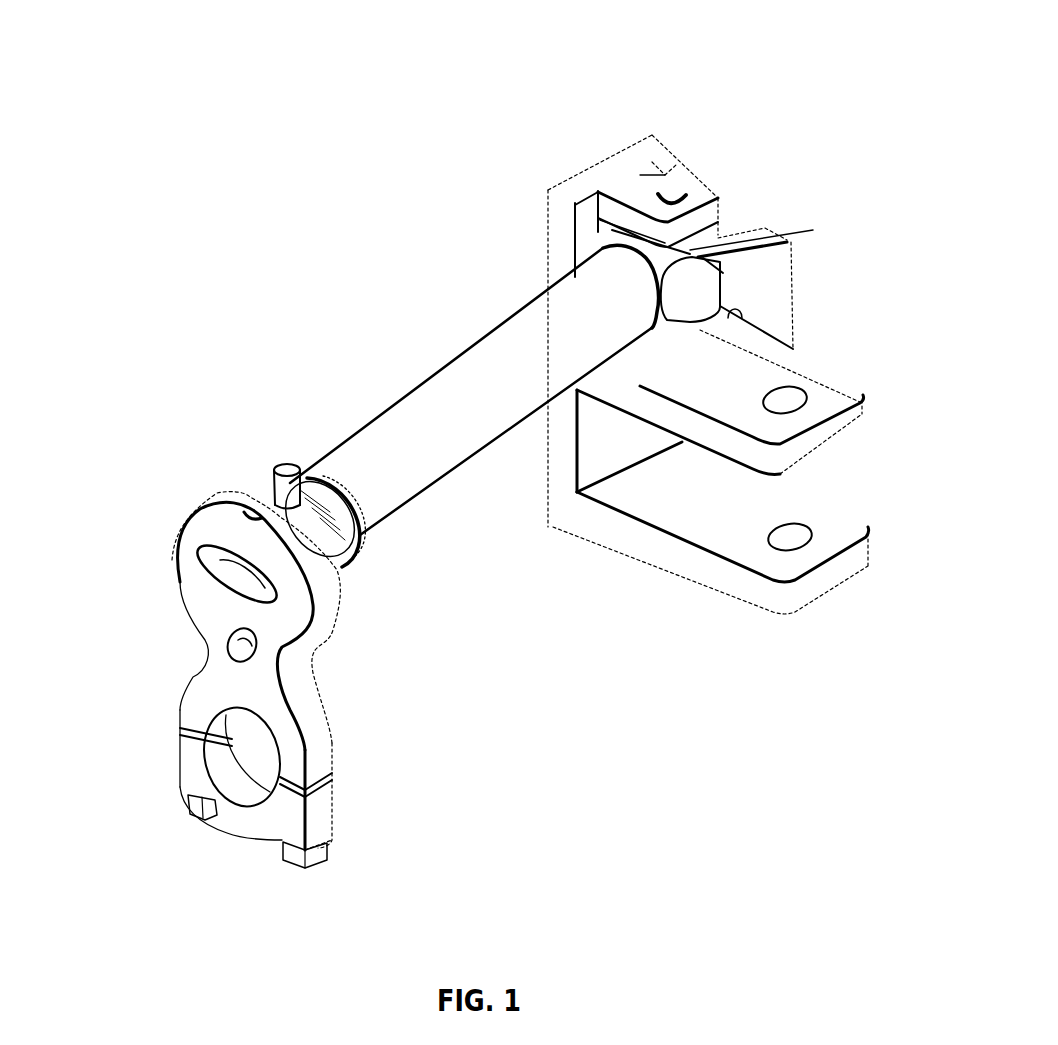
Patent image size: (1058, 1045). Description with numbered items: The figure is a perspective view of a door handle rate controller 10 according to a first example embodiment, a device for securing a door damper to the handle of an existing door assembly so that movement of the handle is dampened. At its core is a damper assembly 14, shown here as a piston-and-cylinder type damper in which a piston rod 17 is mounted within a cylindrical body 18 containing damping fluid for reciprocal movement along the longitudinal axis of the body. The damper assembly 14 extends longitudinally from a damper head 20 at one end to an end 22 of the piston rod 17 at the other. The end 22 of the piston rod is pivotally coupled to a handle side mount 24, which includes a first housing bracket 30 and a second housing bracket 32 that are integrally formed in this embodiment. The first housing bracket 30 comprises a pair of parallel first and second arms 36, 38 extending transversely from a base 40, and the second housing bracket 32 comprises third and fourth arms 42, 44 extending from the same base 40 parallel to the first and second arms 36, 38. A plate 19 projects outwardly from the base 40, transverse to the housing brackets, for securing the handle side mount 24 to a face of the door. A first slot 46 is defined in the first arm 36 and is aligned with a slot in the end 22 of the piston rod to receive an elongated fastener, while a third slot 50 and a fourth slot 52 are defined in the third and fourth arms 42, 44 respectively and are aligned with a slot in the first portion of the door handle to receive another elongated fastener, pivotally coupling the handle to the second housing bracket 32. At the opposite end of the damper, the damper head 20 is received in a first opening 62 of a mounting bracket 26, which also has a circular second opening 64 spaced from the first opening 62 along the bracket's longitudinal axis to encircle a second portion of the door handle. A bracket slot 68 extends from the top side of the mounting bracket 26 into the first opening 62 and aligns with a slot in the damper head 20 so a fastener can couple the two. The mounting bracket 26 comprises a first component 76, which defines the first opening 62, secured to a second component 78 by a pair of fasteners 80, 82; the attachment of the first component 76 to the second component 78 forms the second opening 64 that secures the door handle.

The door handle rate controller 10 is at (242, 304).
The damper assembly 14 is at (477, 412).
The piston rod 17 is at (610, 235).
The body 18 is at (387, 480).
The plate 19 is at (784, 294).
The damper head 20 is at (243, 580).
The end of the piston rod 22 is at (812, 231).
The handle side mount 24 is at (624, 78).
The mounting bracket 26 is at (154, 493).
The first housing bracket 30 is at (756, 196).
The second housing bracket 32 is at (874, 443).
The first arm 36 is at (678, 169).
The second arm 38 is at (697, 278).
The base 40 is at (565, 486).
The third arm 42 is at (776, 357).
The fourth arm 44 is at (830, 520).
The first slot 46 is at (695, 196).
The third slot 50 is at (790, 401).
The fourth slot 52 is at (788, 538).
The first opening 62 is at (255, 752).
The second opening 64 is at (277, 597).
The bracket slot 68 is at (250, 510).
The first component 76 is at (335, 687).
The second component 78 is at (357, 833).
The fastener 80 is at (193, 816).
The fastener 82 is at (283, 853).